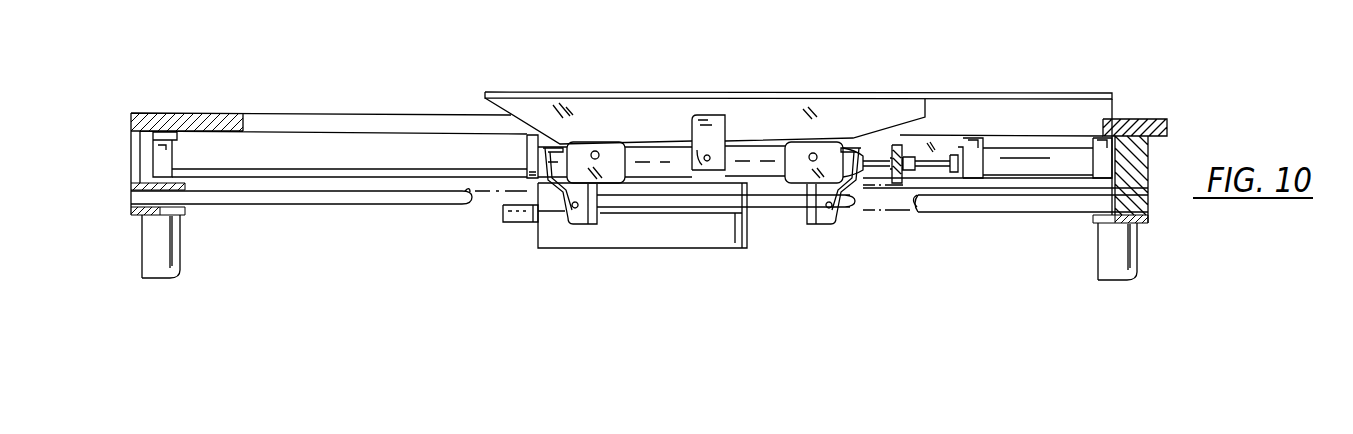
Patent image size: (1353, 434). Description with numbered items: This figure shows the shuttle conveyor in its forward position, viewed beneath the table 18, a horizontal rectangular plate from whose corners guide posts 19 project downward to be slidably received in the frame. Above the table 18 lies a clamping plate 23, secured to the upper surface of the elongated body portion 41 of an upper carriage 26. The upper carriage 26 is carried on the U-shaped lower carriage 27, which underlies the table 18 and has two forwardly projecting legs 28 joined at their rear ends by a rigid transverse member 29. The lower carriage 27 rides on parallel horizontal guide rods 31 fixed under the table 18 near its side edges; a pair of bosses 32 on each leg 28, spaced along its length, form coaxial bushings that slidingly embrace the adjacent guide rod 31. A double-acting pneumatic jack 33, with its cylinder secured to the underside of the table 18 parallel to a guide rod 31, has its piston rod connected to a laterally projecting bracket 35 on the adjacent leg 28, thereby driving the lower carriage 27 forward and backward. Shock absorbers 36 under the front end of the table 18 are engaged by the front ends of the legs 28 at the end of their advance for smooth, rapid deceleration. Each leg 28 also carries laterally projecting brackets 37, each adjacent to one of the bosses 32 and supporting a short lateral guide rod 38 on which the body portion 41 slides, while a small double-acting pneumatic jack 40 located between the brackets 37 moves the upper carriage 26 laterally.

The table 18 is at (218, 91).
The guide posts 19 is at (143, 244).
The clamping plates 23 is at (1100, 93).
The upper carriage 26 is at (497, 109).
The lower carriage 27 is at (688, 199).
The legs 28 is at (770, 186).
The transverse member 29 is at (512, 223).
The guide rods 31 is at (1040, 206).
The bosses 32 is at (582, 227).
The double-acting pneumatic jack 33 is at (352, 172).
The bracket 35 is at (897, 186).
The shock absorbers 36 is at (1015, 165).
The brackets 37 is at (619, 151).
The guide rod 38 is at (598, 152).
The double-acting pneumatic jack 40 is at (722, 140).
The body portion 41 is at (566, 112).